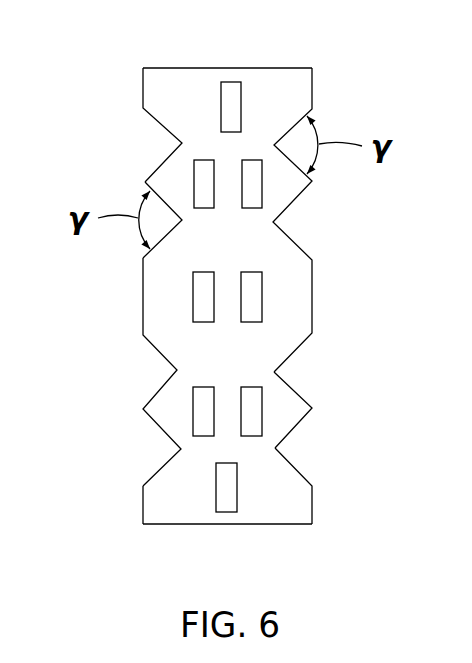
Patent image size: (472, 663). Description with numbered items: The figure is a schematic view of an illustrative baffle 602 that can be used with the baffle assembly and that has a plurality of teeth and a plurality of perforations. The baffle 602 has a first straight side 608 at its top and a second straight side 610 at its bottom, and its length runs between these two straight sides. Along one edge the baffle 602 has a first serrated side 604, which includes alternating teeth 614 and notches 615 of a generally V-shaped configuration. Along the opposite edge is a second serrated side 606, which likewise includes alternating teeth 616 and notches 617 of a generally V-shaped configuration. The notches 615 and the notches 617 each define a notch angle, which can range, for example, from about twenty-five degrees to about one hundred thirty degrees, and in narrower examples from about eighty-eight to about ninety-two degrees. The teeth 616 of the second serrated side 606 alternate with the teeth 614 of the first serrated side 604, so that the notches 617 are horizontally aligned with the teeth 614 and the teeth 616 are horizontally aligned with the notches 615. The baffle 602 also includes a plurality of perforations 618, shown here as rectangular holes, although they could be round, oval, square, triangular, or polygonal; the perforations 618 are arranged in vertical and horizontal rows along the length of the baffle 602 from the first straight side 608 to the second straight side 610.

The baffle 602 is at (167, 512).
The first serrated side 604 is at (143, 276).
The second serrated side 606 is at (313, 295).
The first straight side 608 is at (176, 68).
The second straight side 610 is at (263, 525).
The teeth 614 is at (145, 182).
The notches 615 is at (182, 143).
The teeth 616 is at (312, 408).
The notches 617 is at (275, 448).
The perforations 618 is at (185, 295).